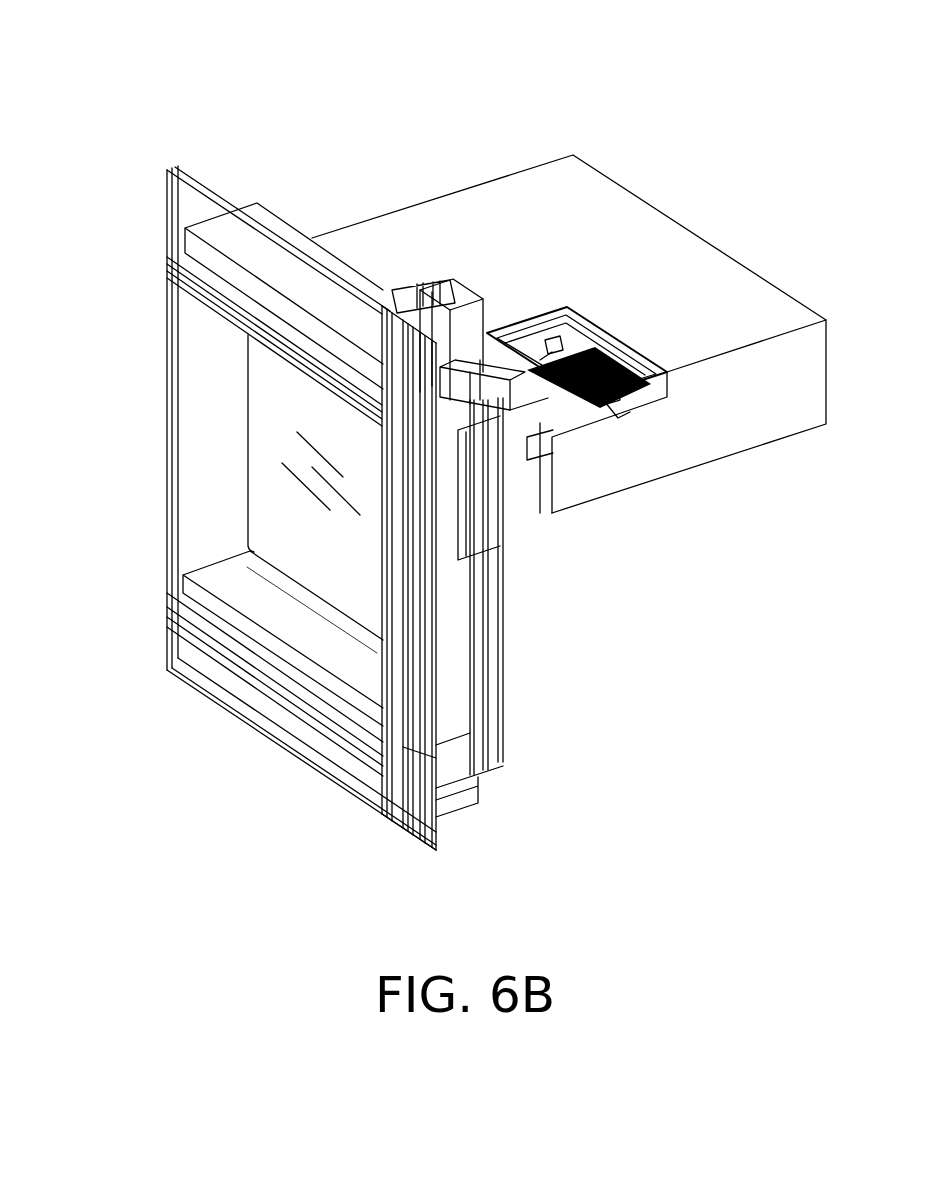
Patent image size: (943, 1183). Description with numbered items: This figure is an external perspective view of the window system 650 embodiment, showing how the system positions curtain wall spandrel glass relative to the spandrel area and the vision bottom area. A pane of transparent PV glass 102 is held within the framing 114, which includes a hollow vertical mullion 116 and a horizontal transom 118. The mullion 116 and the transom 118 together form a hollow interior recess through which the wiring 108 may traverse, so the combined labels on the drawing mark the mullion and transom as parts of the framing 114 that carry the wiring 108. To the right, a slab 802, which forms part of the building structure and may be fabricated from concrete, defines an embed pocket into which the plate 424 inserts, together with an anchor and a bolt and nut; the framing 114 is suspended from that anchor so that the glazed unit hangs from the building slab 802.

The window system 650 is at (110, 85).
The slab 802 is at (599, 240).
The plate 424 is at (612, 415).
The transparent PV glass 102 is at (288, 485).
The wiring 108 is at (417, 508).
The framing 114 is at (417, 508).
The mullion 116 is at (455, 680).
The transom 118 is at (317, 635).